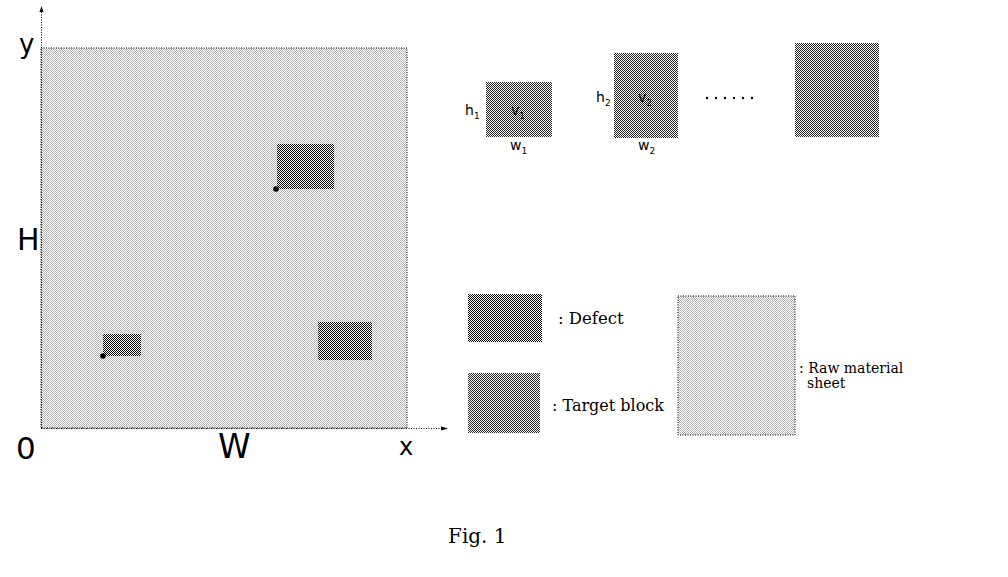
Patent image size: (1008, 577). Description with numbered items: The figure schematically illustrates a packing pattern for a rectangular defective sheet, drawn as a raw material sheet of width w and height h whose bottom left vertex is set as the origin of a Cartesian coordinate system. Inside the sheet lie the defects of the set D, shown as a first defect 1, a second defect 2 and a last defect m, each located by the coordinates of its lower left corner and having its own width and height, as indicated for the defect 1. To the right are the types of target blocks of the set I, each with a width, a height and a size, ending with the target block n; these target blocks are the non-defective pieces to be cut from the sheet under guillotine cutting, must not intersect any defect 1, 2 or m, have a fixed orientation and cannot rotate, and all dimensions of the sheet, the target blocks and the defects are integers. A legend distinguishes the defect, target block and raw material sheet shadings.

The defect 1 is at (119, 350).
The defect 2 is at (303, 168).
The defect m is at (345, 341).
The target block n is at (828, 99).